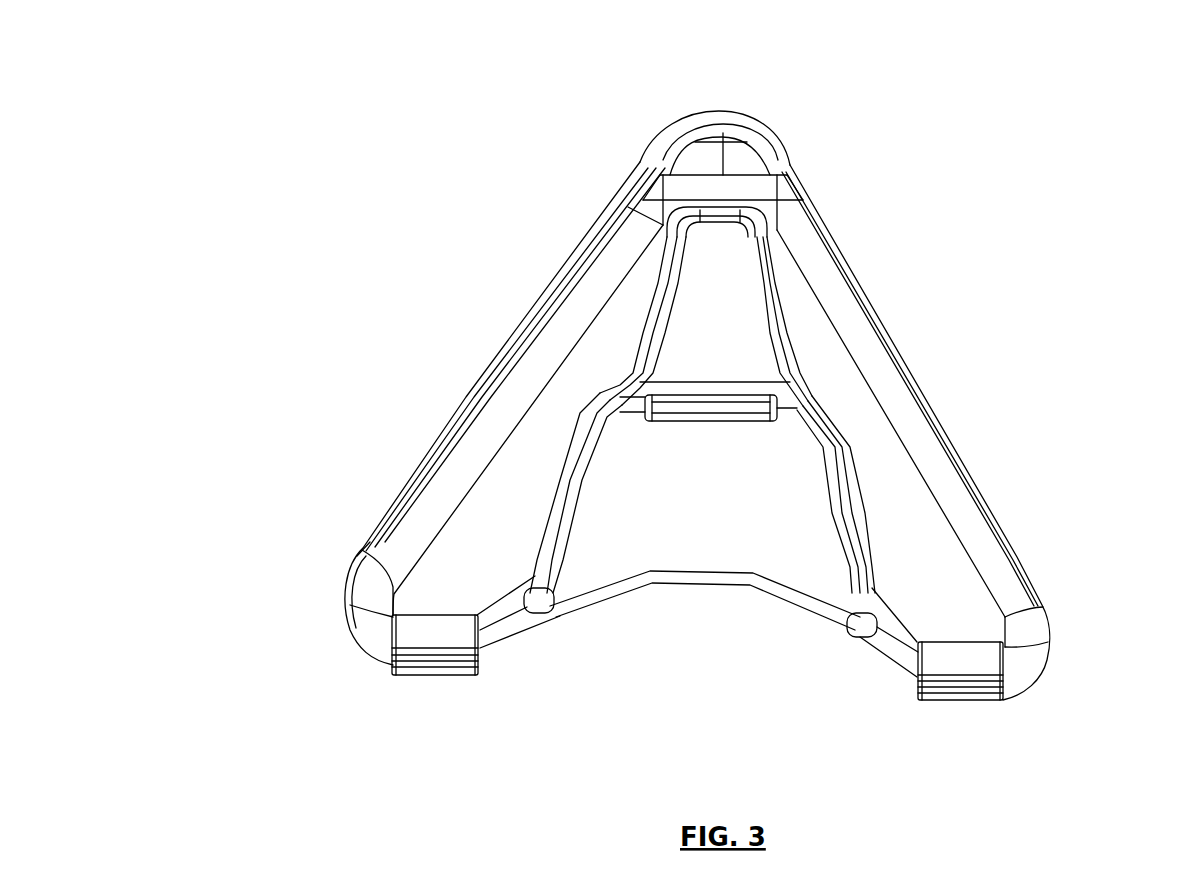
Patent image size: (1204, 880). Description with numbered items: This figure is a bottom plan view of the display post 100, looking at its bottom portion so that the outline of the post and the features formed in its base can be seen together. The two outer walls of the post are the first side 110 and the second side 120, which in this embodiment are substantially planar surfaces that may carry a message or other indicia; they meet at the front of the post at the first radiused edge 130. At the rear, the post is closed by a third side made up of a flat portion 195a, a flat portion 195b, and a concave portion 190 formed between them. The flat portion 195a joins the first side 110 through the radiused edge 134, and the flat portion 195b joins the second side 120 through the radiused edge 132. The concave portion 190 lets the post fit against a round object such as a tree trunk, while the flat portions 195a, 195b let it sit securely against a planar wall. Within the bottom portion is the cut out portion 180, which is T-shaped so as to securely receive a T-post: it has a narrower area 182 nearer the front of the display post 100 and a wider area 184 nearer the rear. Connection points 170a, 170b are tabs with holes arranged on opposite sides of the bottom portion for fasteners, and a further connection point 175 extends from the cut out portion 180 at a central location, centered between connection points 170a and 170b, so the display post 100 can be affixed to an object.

The display post 100 is at (396, 178).
The first side 110 is at (466, 397).
The second side 120 is at (870, 307).
The first radiused edge 130 is at (727, 104).
The radiused edge 132 is at (1048, 642).
The radiused edge 134 is at (350, 605).
The connection point 170a is at (393, 645).
The connection point 170b is at (1005, 680).
The connection point 175 is at (645, 400).
The cut out portion 180 is at (852, 490).
The narrower area 182 is at (722, 297).
The wider area 184 is at (697, 505).
The concave portion 190 is at (728, 590).
The flat portion 195a is at (457, 677).
The flat portion 195b is at (962, 702).